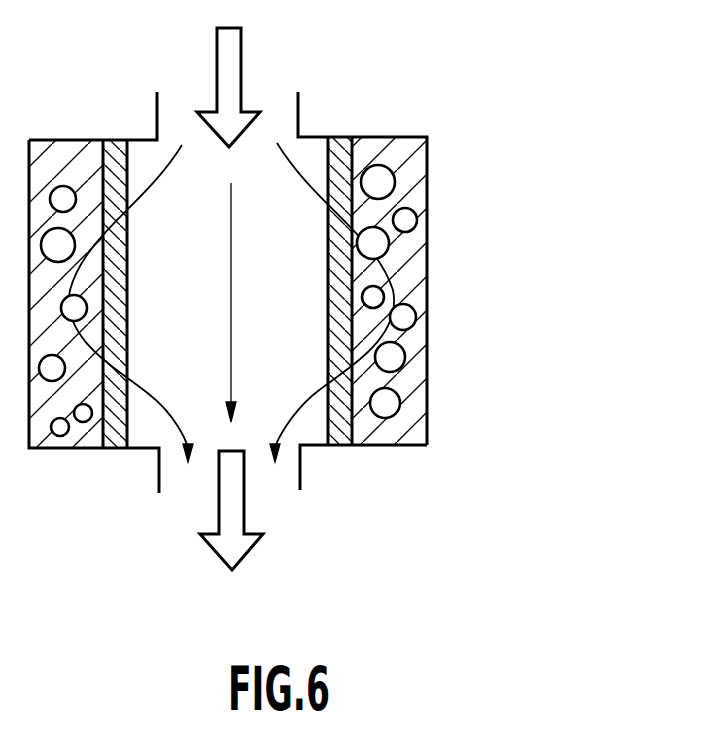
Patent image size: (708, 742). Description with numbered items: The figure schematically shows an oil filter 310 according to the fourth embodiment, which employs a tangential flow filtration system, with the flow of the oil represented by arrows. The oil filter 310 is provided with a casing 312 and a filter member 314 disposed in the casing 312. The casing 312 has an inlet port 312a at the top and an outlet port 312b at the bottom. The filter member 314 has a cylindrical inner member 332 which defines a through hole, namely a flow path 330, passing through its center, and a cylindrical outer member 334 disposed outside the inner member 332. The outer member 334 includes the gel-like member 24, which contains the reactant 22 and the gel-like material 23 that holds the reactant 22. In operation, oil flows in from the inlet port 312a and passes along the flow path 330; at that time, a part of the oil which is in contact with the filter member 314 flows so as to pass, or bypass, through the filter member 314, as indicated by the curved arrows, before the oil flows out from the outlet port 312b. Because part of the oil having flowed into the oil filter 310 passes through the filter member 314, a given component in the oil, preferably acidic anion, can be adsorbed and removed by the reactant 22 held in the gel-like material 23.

The oil filter 310 is at (352, 299).
The casing 312 is at (278, 299).
The inlet port 312a is at (172, 135).
The outlet port 312b is at (288, 460).
The flow path 330 is at (411, 248).
The cylindrical inner member 332 is at (340, 152).
The filter member 314 is at (439, 248).
The gel-like material 23 is at (418, 273).
The gel-like member 24 is at (417, 173).
The reactant 22 is at (415, 217).
The cylindrical outer member 334 is at (418, 383).